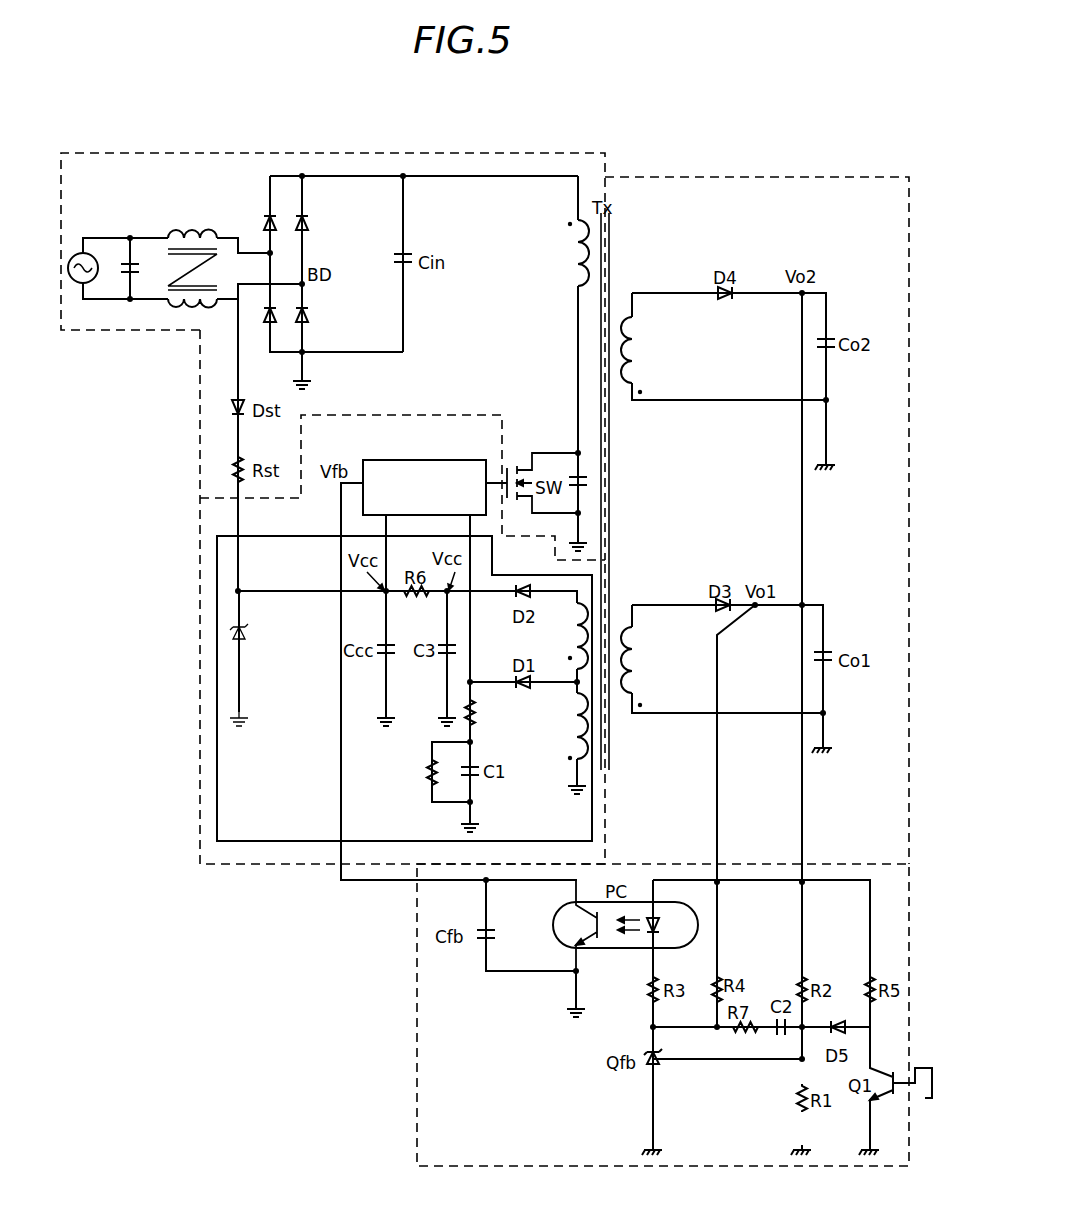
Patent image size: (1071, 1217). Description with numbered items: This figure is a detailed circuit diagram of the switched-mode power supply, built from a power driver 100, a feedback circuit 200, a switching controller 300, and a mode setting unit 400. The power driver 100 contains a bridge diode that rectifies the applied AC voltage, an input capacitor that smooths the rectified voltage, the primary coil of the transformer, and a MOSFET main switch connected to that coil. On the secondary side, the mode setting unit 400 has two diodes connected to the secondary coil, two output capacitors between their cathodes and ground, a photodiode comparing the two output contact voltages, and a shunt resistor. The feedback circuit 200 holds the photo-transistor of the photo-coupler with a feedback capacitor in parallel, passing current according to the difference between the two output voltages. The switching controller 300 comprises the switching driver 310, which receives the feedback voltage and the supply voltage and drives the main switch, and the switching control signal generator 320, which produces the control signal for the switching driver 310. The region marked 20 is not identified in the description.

The power driver 100 is at (388, 153).
The feedback circuit 200 is at (417, 993).
The switching controller 300 is at (199, 771).
The switching driver 310 is at (403, 460).
The switching control signal generator 320 is at (215, 826).
The mode setting unit 400 is at (739, 177).
The zener diode 20 is at (260, 688).